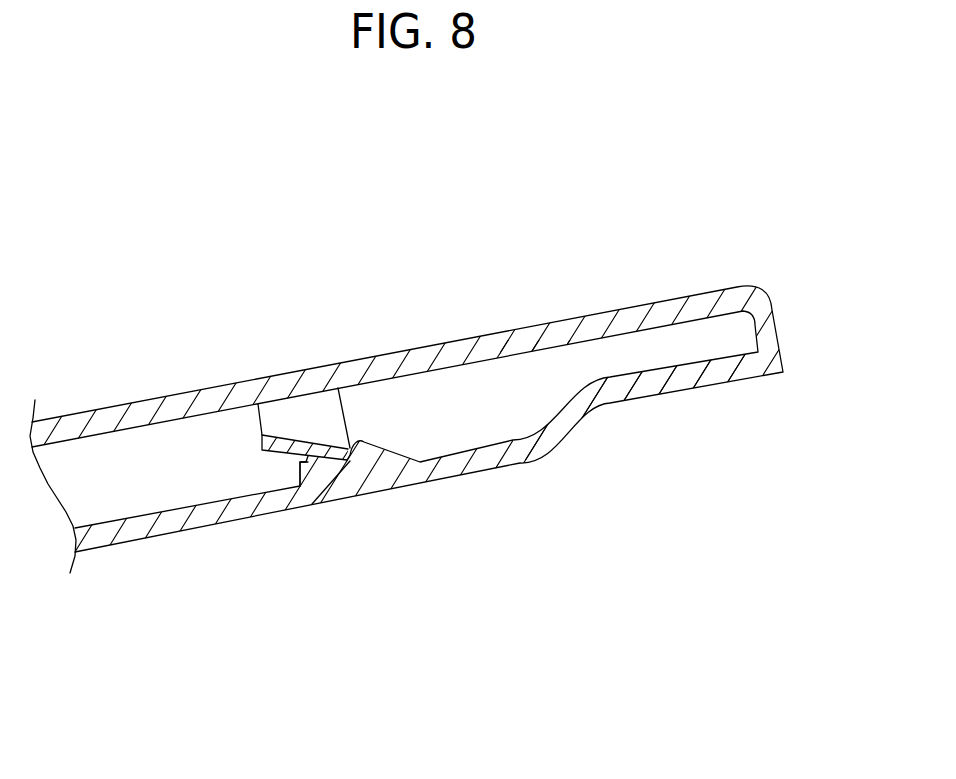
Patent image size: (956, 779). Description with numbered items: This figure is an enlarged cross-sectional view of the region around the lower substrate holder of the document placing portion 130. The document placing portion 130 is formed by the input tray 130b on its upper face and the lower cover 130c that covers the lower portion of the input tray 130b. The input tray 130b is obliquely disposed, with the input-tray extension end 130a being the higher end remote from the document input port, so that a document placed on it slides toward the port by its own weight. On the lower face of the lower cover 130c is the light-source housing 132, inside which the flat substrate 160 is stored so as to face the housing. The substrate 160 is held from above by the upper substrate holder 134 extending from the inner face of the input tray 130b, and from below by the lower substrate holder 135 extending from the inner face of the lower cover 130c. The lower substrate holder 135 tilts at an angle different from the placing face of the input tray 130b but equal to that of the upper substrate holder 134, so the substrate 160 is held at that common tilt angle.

The document placing portion 130 is at (612, 318).
The input-tray extension end 130a is at (780, 328).
The input tray 130b is at (467, 337).
The lower cover 130c is at (543, 450).
The light-source housing 132 is at (452, 480).
The upper substrate holder 134 is at (302, 410).
The lower substrate holder 135 is at (303, 471).
The substrate 160 is at (262, 440).